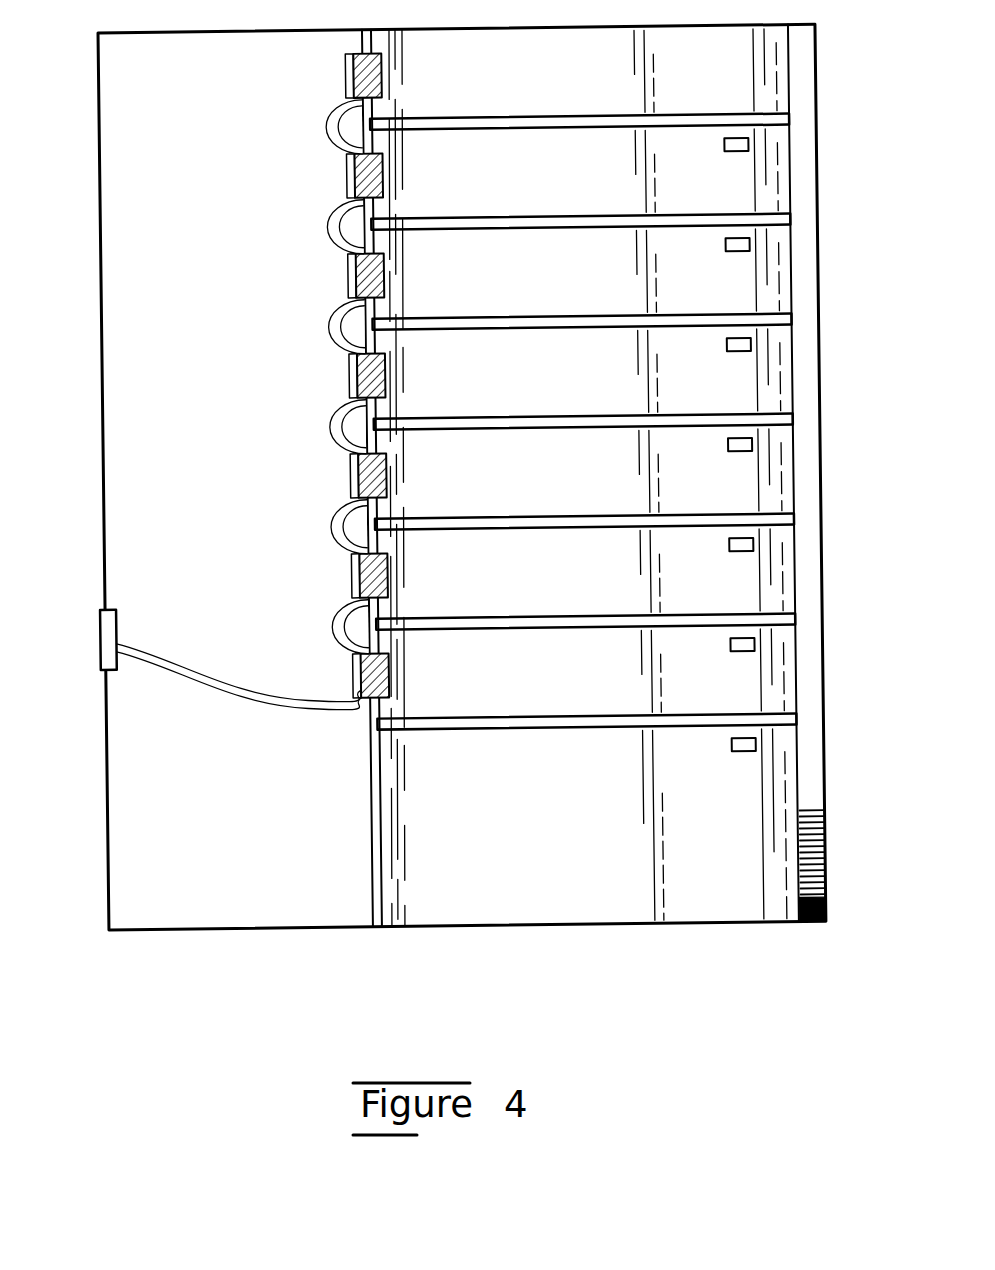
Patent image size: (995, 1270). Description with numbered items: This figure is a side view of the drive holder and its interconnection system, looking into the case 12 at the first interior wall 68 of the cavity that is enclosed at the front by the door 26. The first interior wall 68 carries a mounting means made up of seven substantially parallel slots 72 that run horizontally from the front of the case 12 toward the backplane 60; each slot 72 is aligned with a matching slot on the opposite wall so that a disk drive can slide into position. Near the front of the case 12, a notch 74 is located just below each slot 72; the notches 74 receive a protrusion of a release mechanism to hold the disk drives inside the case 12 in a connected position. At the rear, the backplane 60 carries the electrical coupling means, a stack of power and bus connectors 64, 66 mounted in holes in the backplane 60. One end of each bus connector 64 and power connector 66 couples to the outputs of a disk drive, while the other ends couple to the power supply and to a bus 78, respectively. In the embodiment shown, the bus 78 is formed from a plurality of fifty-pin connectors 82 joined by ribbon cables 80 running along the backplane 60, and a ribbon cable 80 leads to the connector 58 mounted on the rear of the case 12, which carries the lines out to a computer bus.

The case 12 is at (671, 923).
The door 26 is at (818, 857).
The connector 58 is at (93, 627).
The backplane 60 is at (362, 847).
The bus connector 64 is at (435, 373).
The power connector 66 is at (383, 80).
The first interior wall 68 is at (599, 817).
The slot 72 is at (603, 122).
The notch 74 is at (729, 159).
The bus 78 is at (320, 401).
The ribbon cable 80 is at (325, 119).
The 50 pin connector 82 is at (346, 70).